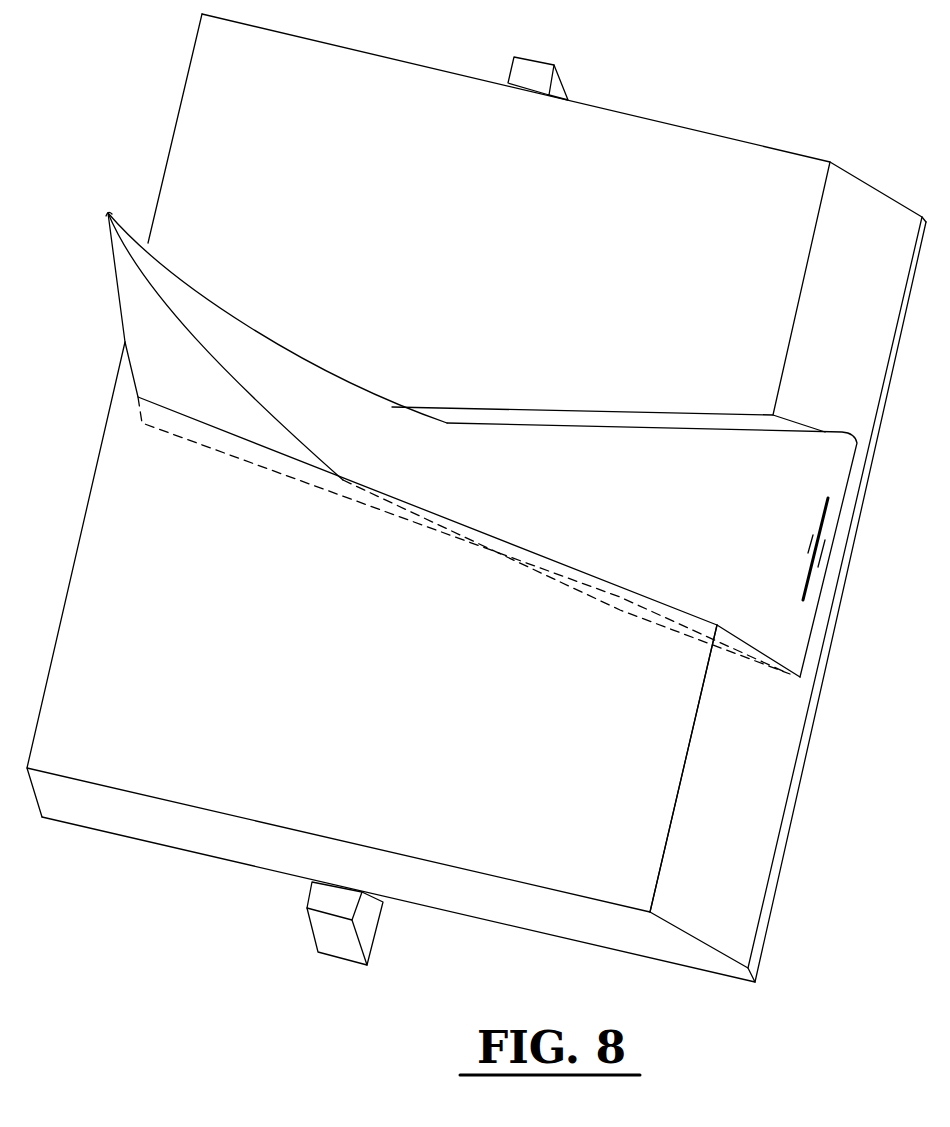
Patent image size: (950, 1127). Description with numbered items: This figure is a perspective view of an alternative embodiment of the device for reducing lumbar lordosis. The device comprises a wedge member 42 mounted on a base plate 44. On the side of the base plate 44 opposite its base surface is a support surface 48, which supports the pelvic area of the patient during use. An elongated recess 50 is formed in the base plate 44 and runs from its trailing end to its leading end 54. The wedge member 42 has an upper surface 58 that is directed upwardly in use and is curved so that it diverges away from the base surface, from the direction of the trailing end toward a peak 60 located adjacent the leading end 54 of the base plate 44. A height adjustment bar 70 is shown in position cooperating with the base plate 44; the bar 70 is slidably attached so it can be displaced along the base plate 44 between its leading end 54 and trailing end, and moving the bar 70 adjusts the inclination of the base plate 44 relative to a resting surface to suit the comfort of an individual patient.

The wedge member 42 is at (258, 307).
The base plate 44 is at (528, 918).
The support surface 48 is at (628, 272).
The elongated recess 50 is at (616, 418).
The leading end 54 is at (95, 478).
The upper surface 58 is at (275, 363).
The peak 60 is at (108, 212).
The height adjustment bar 70 is at (345, 953).